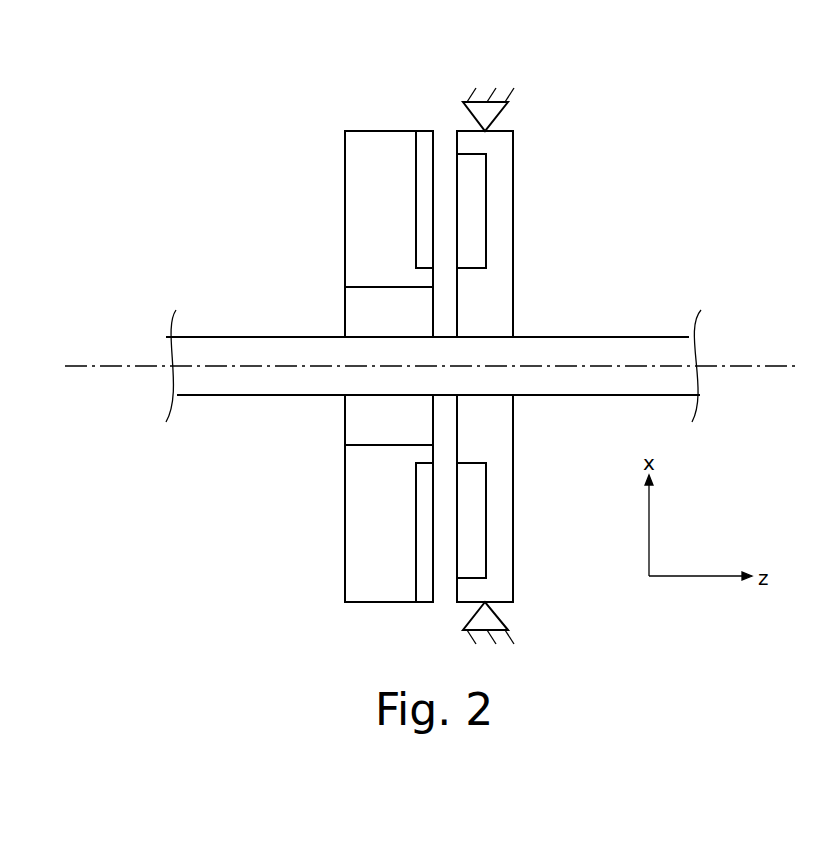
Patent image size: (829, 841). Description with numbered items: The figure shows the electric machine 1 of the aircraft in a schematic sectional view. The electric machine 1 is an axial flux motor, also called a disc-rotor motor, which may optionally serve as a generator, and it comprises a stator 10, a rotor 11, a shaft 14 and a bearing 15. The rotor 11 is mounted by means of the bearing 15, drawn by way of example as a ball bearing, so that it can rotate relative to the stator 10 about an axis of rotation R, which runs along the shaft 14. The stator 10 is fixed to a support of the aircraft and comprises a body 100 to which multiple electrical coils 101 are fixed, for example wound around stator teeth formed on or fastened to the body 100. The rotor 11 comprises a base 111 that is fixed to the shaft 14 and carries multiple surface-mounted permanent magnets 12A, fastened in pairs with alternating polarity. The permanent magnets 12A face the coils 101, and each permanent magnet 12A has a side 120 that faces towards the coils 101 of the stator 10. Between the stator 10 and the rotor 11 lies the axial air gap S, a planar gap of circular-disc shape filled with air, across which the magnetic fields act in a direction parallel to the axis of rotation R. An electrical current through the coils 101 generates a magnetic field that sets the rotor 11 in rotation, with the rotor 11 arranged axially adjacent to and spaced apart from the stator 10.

The electric machine 1 is at (180, 122).
The stator 10 is at (349, 325).
The body 100 is at (361, 234).
The electrical coils 101 is at (423, 138).
The rotor 11 is at (546, 366).
The base 111 is at (490, 298).
The permanent magnets 12A is at (480, 168).
The side 120 is at (456, 217).
The shaft 14 is at (232, 360).
The bearing 15 is at (487, 112).
The axis of rotation R is at (80, 365).
The axial air gap S is at (447, 118).